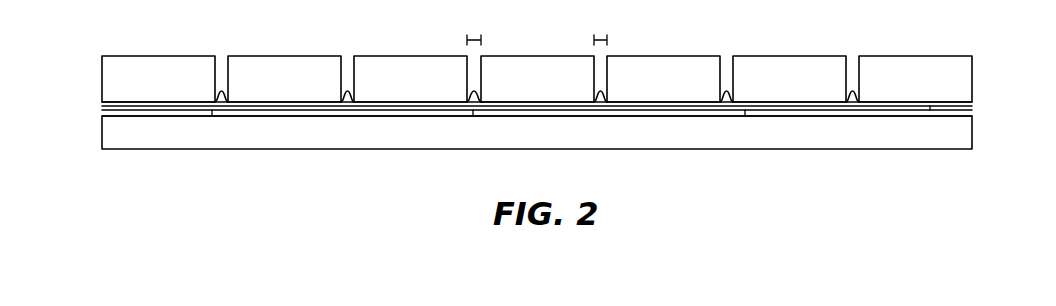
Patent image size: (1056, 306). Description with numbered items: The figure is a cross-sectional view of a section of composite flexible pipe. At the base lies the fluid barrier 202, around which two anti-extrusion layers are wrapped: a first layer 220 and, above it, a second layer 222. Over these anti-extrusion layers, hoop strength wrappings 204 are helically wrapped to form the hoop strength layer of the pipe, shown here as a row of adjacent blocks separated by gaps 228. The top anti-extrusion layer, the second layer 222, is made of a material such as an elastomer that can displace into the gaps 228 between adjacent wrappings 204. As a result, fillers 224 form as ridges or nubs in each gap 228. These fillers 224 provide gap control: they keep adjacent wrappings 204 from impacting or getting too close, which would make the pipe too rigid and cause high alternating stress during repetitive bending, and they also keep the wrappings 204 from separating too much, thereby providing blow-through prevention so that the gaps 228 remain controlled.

The fluid barrier 202 is at (280, 151).
The hoop strength wrappings 204 is at (158, 56).
The first layer 220 is at (102, 112).
The second layer 222 is at (972, 108).
The fillers 224 is at (238, 98).
The gaps 228 is at (474, 35).